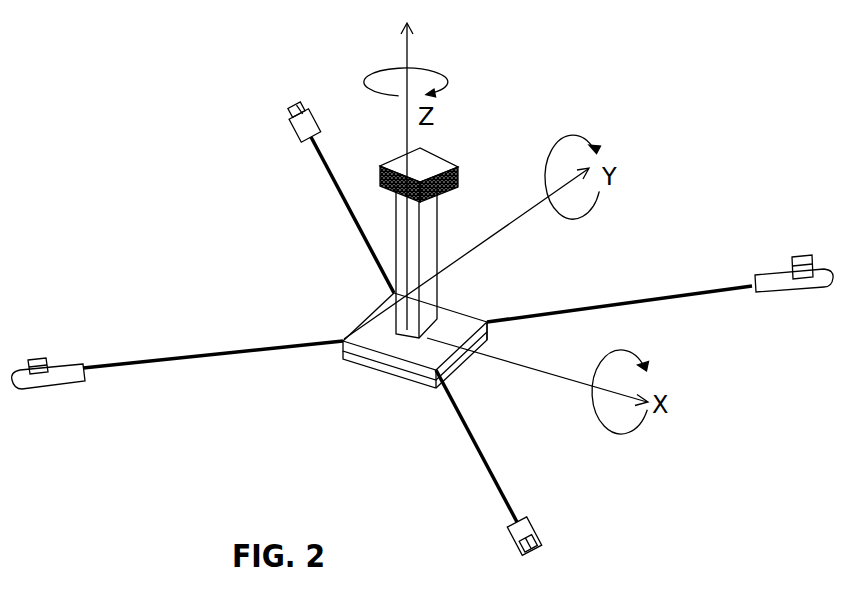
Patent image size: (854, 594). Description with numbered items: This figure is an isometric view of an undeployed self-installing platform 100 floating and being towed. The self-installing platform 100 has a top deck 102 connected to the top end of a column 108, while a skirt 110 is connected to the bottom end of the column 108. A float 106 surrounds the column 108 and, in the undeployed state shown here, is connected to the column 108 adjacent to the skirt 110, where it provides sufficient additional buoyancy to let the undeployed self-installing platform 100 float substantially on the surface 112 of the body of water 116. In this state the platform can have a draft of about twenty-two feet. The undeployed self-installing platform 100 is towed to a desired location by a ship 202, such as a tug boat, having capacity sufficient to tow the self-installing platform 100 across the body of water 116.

The self-installing platform 100 is at (137, 238).
The top deck 102 is at (459, 168).
The float 106 is at (352, 350).
The column 108 is at (397, 243).
The skirt 110 is at (388, 378).
The surface of the body of water 112 is at (490, 336).
The body of water 116 is at (223, 206).
The ship 202 is at (38, 361).